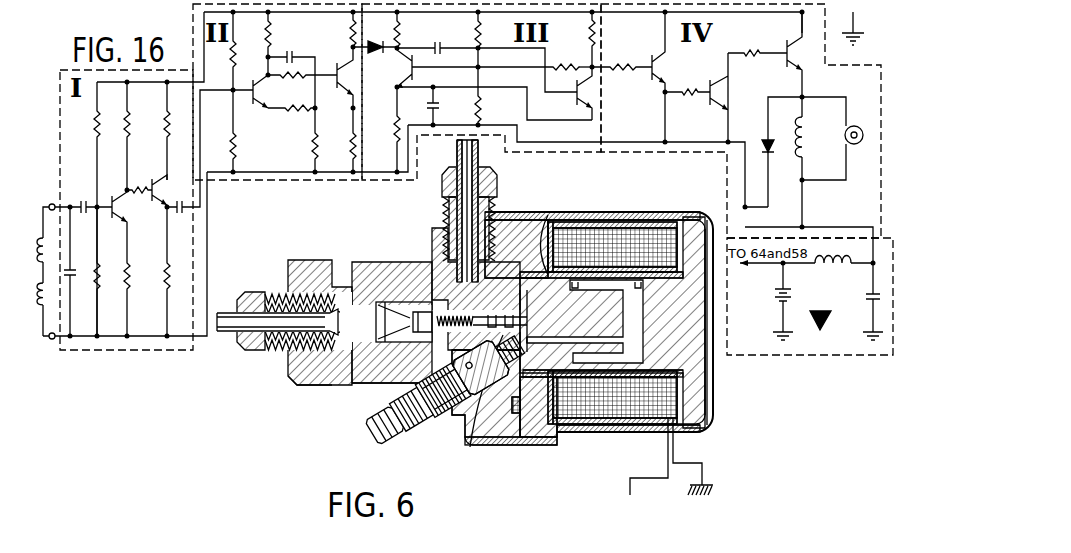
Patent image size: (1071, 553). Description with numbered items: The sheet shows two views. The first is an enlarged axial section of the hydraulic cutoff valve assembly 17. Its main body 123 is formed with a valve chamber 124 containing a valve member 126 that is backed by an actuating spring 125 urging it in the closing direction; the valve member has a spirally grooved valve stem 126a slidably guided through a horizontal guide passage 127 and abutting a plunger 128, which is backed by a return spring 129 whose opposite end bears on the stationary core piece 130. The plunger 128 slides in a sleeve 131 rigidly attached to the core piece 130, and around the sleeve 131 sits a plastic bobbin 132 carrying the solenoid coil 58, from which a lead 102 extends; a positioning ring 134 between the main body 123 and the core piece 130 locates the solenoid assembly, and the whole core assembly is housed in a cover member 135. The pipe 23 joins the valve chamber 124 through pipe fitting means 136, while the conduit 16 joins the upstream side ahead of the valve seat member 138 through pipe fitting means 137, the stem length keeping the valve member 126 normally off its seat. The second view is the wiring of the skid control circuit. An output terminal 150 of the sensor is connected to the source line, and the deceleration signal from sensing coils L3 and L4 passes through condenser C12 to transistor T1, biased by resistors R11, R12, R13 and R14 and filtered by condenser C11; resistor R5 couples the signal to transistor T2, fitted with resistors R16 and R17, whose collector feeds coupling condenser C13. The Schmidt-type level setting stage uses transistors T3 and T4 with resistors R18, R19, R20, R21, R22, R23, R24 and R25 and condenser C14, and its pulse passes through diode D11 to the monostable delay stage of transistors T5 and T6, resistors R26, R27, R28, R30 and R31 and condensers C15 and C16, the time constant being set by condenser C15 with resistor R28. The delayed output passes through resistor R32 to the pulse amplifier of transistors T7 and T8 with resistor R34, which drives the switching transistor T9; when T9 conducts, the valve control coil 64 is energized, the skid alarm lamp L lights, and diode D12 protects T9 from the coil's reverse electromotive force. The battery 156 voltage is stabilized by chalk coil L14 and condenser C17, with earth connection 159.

In FIG. 16, the output terminal 150 is at (50, 204).
In FIG. 16, the sensing coil L4 is at (50, 244).
In FIG. 16, the sensing coil L3 is at (45, 333).
In FIG. 16, the condenser C12 is at (78, 203).
In FIG. 16, the condenser C11 is at (74, 272).
In FIG. 16, the resistor R11 is at (95, 124).
In FIG. 16, the resistor R13 is at (124, 118).
In FIG. 16, the resistor R16 is at (165, 124).
In FIG. 16, the resistor R5 is at (142, 182).
In FIG. 16, the transistor T1 is at (110, 220).
In FIG. 16, the transistor T2 is at (152, 200).
In FIG. 16, the resistor R12 is at (99, 290).
In FIG. 16, the resistor R14 is at (130, 262).
In FIG. 16, the resistor R17 is at (165, 268).
In FIG. 16, the coupling condenser C13 is at (188, 215).
In FIG. 16, the resistor R18 is at (236, 56).
In FIG. 16, the resistor R20 is at (271, 36).
In FIG. 16, the condenser C14 is at (293, 50).
In FIG. 16, the resistor R21 is at (304, 79).
In FIG. 16, the transistor T3 is at (252, 100).
In FIG. 16, the resistor R22 is at (284, 111).
In FIG. 16, the resistor R19 is at (236, 140).
In FIG. 16, the resistor R23 is at (310, 142).
In FIG. 16, the resistor R24 is at (340, 31).
In FIG. 16, the transistor T4 is at (337, 79).
In FIG. 16, the resistor R25 is at (350, 136).
In FIG. 16, the diode D11 is at (380, 52).
In FIG. 16, the resistor R26 is at (400, 34).
In FIG. 16, the transistor T5 is at (396, 89).
In FIG. 16, the condenser C15 is at (487, 56).
In FIG. 16, the resistor R28 is at (481, 34).
In FIG. 16, the condenser C16 is at (428, 100).
In FIG. 16, the resistor R27 is at (394, 116).
In FIG. 16, the resistor R31 is at (590, 32).
In FIG. 16, the resistor R30 is at (568, 66).
In FIG. 16, the resistor R32 is at (618, 66).
In FIG. 16, the transistor T6 is at (576, 102).
In FIG. 16, the transistor T7 is at (652, 80).
In FIG. 16, the resistor R34 is at (690, 96).
In FIG. 16, the transistor T8 is at (712, 82).
In FIG. 16, the switching transistor T9 is at (787, 56).
In FIG. 16, the diode D12 is at (764, 142).
In FIG. 16, the valve control coil 64 is at (805, 126).
In FIG. 16, the skid alarm lamp L is at (856, 126).
In FIG. 16, the chalk coil L14 is at (850, 272).
In FIG. 16, the battery 156 is at (770, 308).
In FIG. 16, the condenser C17 is at (870, 292).
In FIG. 6, the pipe fitting means 136 is at (298, 262).
In FIG. 6, the valve chamber 124 is at (312, 385).
In FIG. 6, the main body 123 is at (350, 262).
In FIG. 6, the valve member 126 is at (430, 305).
In FIG. 6, the valve stem 126a is at (378, 383).
In FIG. 6, the pipe 23 is at (236, 308).
In FIG. 6, the actuating spring 125 is at (385, 300).
In FIG. 6, the cutoff valve assembly 17 is at (373, 258).
In FIG. 6, the pipe fitting means 137 is at (497, 185).
In FIG. 6, the conduit 16 is at (478, 165).
In FIG. 6, the sleeve 131 is at (548, 215).
In FIG. 6, the bobbin 132 is at (705, 222).
In FIG. 6, the stationary core piece 130 is at (692, 400).
In FIG. 6, the solenoid coil 58 is at (618, 248).
In FIG. 6, the cover member 135 is at (713, 428).
In FIG. 6, the plunger 128 is at (703, 366).
In FIG. 6, the return spring 129 is at (698, 380).
In FIG. 6, the positioning ring 134 is at (545, 440).
In FIG. 6, the guide passage 127 is at (478, 440).
In FIG. 6, the valve seat member 138 is at (365, 425).
In FIG. 6, the lead 102 is at (645, 490).
In FIG. 6, the ground 159 is at (705, 472).